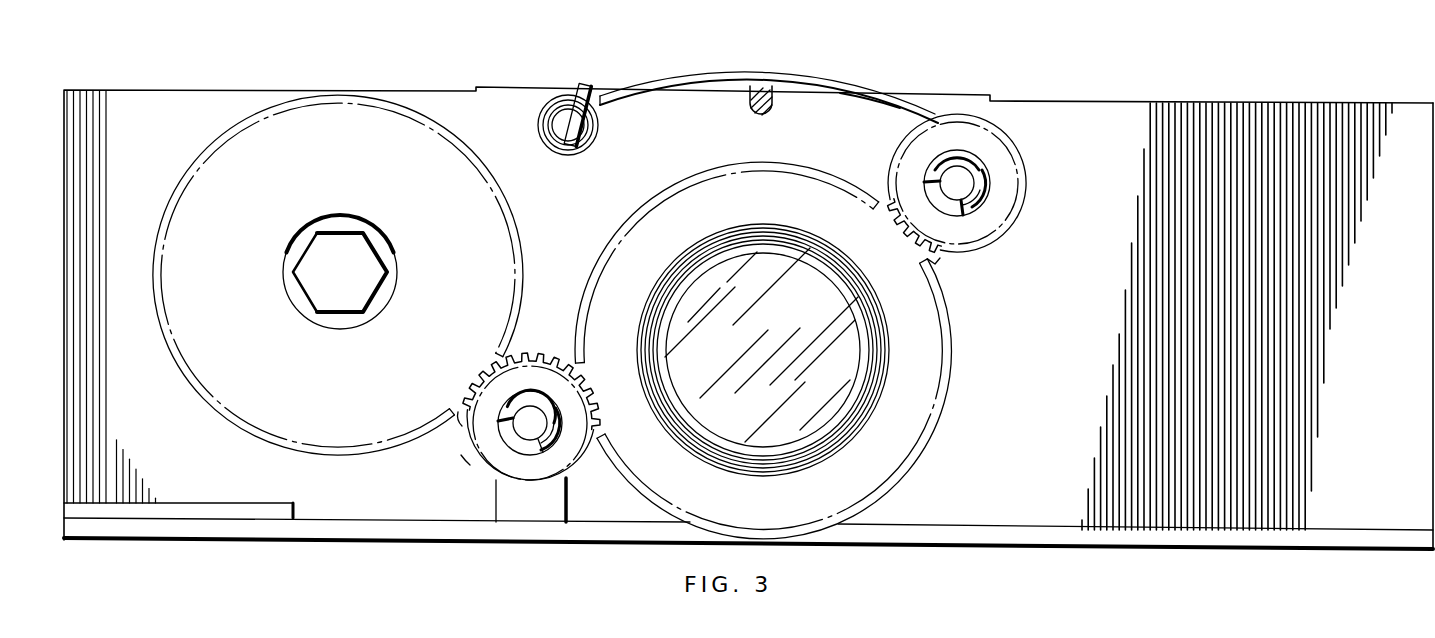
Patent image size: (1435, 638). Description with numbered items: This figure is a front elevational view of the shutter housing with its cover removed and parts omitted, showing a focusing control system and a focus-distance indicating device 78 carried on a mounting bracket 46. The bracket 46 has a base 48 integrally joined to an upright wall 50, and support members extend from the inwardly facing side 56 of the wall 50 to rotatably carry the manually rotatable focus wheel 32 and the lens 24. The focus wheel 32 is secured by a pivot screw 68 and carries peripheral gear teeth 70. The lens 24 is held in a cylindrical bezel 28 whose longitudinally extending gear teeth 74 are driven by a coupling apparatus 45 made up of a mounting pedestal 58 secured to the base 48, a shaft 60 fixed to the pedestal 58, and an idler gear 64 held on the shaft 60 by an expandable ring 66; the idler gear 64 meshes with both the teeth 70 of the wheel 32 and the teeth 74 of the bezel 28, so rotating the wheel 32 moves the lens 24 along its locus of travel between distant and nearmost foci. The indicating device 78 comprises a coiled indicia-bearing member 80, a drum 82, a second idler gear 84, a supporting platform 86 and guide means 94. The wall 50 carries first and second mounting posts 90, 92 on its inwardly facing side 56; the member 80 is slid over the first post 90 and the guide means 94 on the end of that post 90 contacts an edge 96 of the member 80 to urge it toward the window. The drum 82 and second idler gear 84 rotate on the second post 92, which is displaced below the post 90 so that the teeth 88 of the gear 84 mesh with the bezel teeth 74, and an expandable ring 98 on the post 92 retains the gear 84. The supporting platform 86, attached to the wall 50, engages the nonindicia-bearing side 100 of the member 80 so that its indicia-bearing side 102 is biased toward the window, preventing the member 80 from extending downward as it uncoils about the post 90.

The lens 24 is at (845, 380).
The cylindrical bezel 28 is at (932, 342).
The focus wheel 32 is at (258, 405).
The coupling apparatus 45 is at (480, 476).
The mounting bracket 46 is at (1195, 100).
The base 48 is at (1182, 542).
The upright wall 50 is at (1432, 552).
The inwardly facing side 56 is at (1062, 343).
The mounting pedestal 58 is at (566, 500).
The shaft 60 is at (512, 406).
The idler gear 64 is at (508, 362).
The expandable ring 66 is at (516, 413).
The pivot screw 68 is at (342, 250).
The gear teeth 70 is at (463, 426).
The gear teeth 74 is at (936, 262).
The device 78 is at (769, 91).
The indicia-bearing member 80 is at (636, 90).
The drum 82 is at (957, 160).
The second idler gear 84 is at (975, 200).
The supporting platform 86 is at (628, 94).
The gear teeth 88 is at (928, 256).
The first mounting post 90 is at (580, 128).
The second mounting post 92 is at (950, 196).
The guide means 94 is at (601, 107).
The edge 96 is at (590, 96).
The expandable ring 98 is at (980, 196).
The nonindicia-bearing side 100 is at (870, 113).
The indicia-bearing side 102 is at (758, 88).